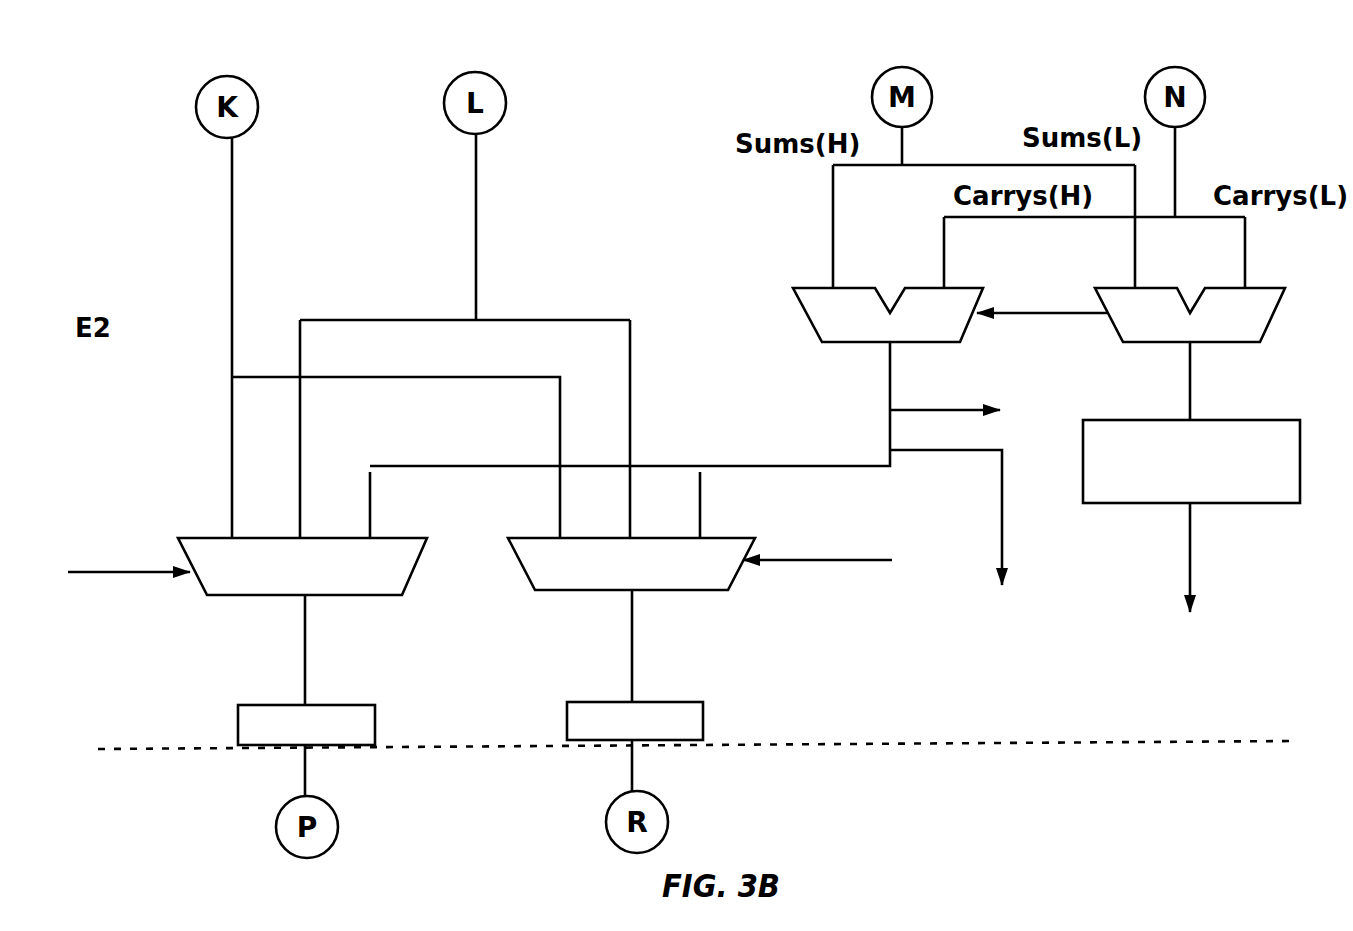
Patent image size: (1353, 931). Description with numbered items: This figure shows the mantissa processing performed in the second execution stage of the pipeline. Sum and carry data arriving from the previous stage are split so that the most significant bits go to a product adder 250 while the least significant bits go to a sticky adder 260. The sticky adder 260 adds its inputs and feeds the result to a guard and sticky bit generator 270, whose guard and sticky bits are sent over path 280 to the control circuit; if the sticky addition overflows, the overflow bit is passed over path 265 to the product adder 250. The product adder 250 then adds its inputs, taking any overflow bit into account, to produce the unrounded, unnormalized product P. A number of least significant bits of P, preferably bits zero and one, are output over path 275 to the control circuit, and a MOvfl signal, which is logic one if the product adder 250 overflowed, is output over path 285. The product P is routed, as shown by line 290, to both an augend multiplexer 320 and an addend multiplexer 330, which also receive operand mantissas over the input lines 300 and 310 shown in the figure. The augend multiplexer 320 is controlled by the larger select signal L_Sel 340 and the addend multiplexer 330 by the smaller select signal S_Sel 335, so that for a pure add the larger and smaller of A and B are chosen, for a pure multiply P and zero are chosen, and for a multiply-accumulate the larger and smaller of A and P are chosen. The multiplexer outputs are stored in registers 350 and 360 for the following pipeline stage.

The product adder 250 is at (944, 285).
The sticky adder 260 is at (1245, 285).
The path 265 is at (998, 313).
The guard and sticky bit generator 270 is at (1225, 420).
The path 275 is at (1002, 497).
The path 280 is at (1192, 555).
The path 285 is at (928, 412).
The P bus 290 is at (755, 466).
The K input bus 300 is at (232, 212).
The L input bus 310 is at (476, 208).
The augend multiplexer 320 is at (285, 597).
The addend multiplexer 330 is at (617, 592).
The smaller select (S_Sel) signal 335 is at (770, 563).
The larger select (L_Sel) signal 340 is at (165, 575).
The register 350 is at (317, 703).
The register 360 is at (648, 700).